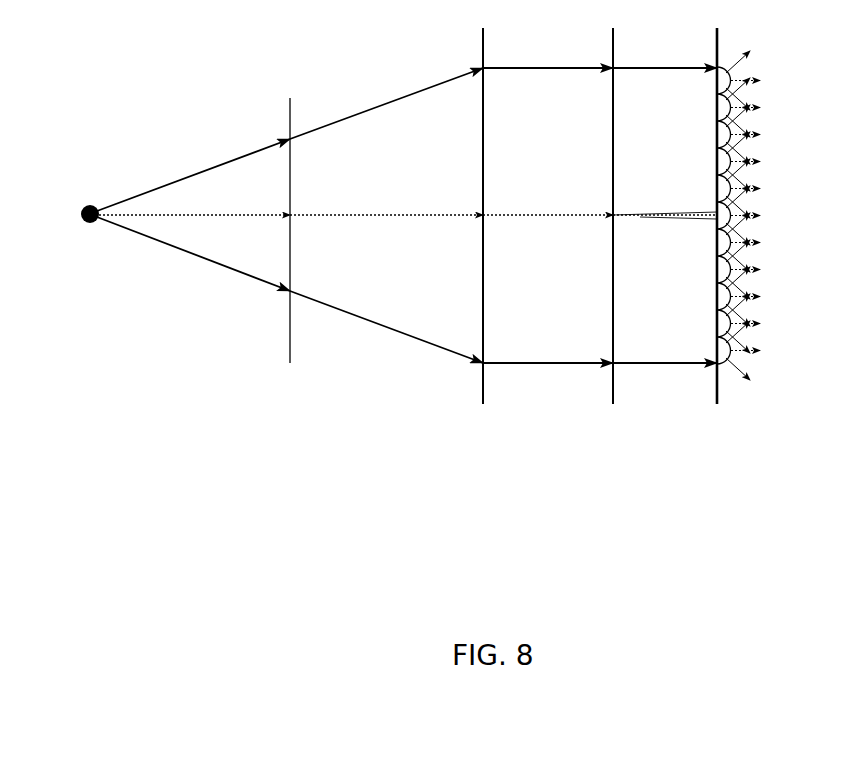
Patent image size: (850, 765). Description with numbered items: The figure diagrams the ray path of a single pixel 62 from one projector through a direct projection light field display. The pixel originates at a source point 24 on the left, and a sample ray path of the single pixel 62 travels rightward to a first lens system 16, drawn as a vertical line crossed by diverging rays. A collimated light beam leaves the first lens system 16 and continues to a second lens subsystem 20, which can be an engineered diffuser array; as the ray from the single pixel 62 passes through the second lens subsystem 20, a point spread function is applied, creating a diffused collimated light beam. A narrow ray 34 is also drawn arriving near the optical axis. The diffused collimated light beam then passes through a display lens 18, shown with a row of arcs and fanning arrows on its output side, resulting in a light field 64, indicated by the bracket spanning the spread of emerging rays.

The light source 24 is at (88, 223).
The single pixel 62 is at (215, 215).
The first lens system 16 is at (483, 404).
The second lens subsystem 20 is at (613, 404).
The display lens 18 is at (717, 404).
The light ray 34 is at (702, 215).
The light field 64 is at (778, 65).